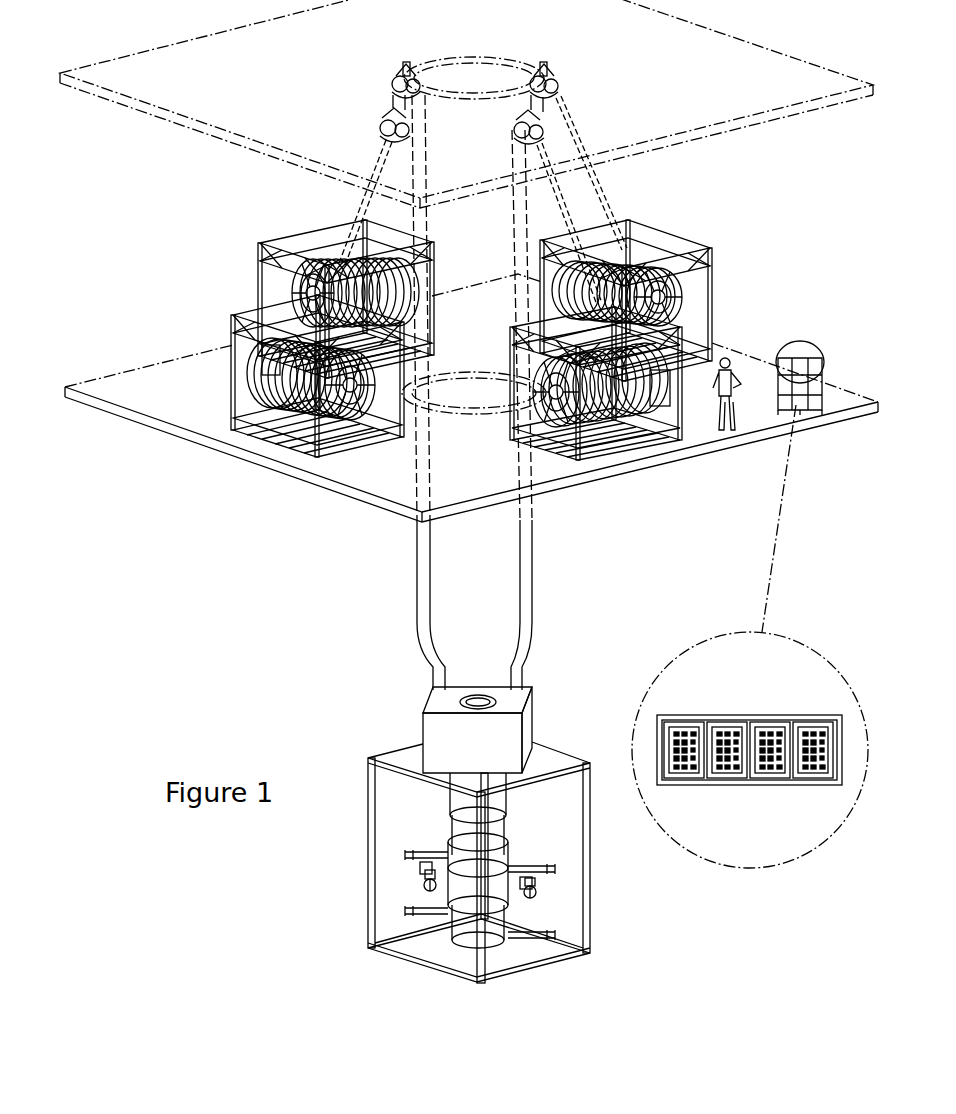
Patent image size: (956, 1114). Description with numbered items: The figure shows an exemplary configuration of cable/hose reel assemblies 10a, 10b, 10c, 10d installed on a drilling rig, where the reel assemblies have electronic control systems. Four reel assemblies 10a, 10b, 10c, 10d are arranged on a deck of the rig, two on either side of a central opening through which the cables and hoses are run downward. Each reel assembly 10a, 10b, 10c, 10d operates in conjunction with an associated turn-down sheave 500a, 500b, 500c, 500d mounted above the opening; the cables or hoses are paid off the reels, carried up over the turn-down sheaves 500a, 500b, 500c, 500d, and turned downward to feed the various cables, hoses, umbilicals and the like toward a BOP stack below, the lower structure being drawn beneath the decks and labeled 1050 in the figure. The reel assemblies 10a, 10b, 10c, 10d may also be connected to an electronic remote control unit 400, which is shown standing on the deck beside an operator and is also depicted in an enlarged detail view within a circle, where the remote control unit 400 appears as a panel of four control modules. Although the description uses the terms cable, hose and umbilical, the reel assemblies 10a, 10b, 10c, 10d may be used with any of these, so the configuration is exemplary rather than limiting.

The reel assembly 10a is at (277, 240).
The reel assembly 10b is at (240, 313).
The reel assembly 10c is at (612, 440).
The reel assembly 10d is at (650, 230).
The turn-down sheave 500a is at (406, 65).
The turn-down sheave 500b is at (388, 112).
The turn-down sheave 500c is at (512, 115).
The turn-down sheave 500d is at (556, 75).
The electronic remote control unit 400 is at (797, 343).
The wellhead assembly 1050 is at (417, 740).